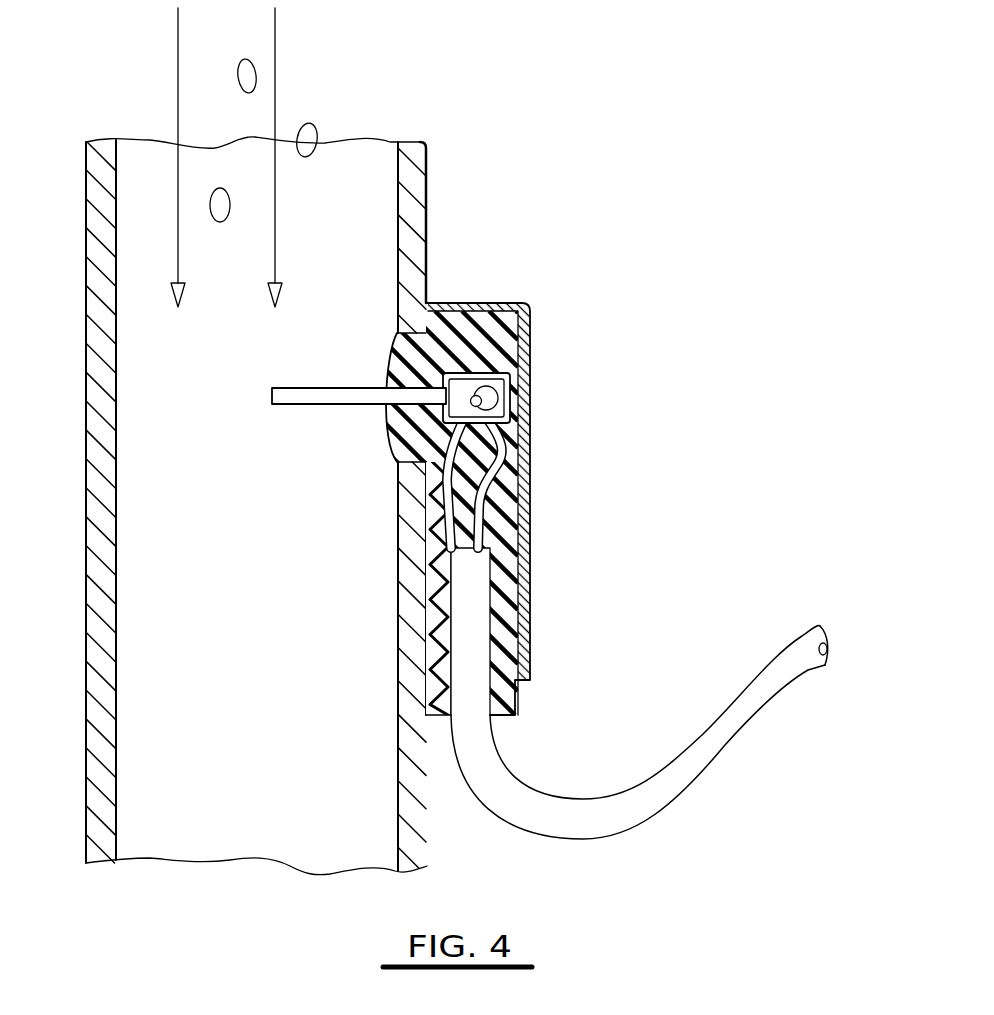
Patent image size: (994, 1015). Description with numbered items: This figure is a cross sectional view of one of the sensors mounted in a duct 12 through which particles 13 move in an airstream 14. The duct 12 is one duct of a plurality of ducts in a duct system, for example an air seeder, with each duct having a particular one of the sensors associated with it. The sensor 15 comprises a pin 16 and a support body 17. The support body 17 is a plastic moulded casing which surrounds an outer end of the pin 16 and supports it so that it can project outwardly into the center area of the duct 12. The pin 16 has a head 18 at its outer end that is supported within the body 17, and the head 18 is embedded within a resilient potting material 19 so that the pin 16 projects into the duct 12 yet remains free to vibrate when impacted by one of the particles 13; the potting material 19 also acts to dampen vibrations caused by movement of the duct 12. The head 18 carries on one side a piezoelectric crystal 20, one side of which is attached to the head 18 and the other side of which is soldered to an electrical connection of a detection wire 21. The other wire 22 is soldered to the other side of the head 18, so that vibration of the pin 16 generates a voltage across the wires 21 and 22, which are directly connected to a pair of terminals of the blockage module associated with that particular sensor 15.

The duct 12 is at (433, 203).
The particles 13 is at (245, 60).
The airstream 14 is at (173, 106).
The sensor 15 is at (525, 571).
The pin 16 is at (301, 407).
The support body 17 is at (540, 579).
The head 18 is at (485, 360).
The resilient potting material 19 is at (505, 630).
The piezoelectric crystal 20 is at (494, 392).
The detection wire 21 is at (455, 512).
The other wire 22 is at (480, 535).